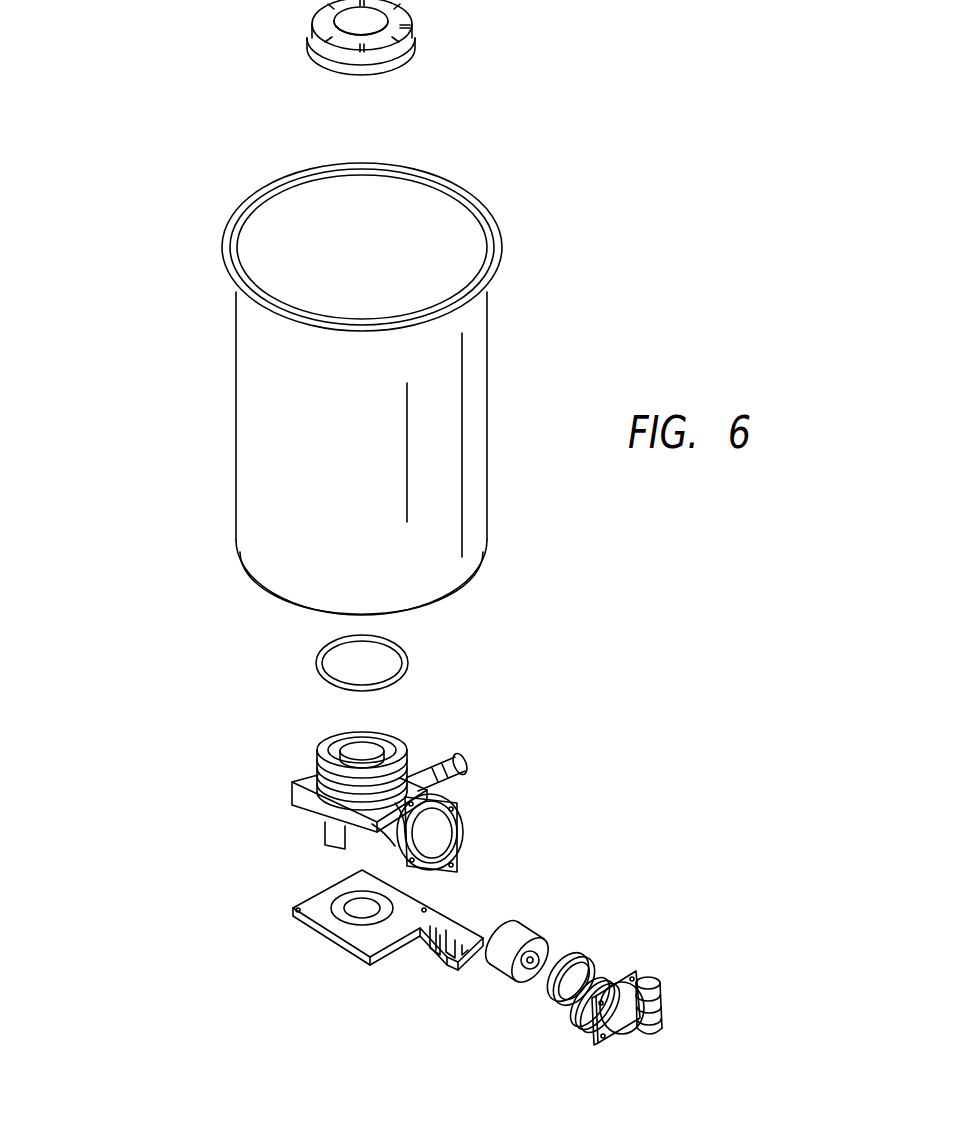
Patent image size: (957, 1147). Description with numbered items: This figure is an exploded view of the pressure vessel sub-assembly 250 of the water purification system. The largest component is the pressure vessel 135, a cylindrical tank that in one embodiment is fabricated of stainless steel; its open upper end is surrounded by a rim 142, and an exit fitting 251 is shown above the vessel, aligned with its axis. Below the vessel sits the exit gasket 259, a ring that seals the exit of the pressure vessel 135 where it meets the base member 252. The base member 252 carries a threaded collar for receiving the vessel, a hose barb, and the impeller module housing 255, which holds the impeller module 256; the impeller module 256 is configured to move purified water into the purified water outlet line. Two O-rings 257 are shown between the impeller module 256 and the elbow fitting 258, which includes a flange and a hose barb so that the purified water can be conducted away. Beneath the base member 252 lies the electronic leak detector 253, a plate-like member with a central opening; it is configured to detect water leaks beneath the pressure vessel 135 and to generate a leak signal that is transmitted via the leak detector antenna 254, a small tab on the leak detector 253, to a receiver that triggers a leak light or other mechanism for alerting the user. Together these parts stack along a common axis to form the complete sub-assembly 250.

The pressure vessel 135 is at (235, 378).
The canister rim 142 is at (483, 223).
The pressure vessel sub-assembly 250 is at (593, 285).
The exit fitting 251 is at (312, 22).
The base member 252 is at (327, 838).
The leak detector 253 is at (297, 910).
The leak detector antenna 254 is at (437, 950).
The impeller module housing 255 is at (450, 837).
The impeller module 256 is at (542, 937).
The O-rings 257 is at (577, 958).
The elbow fitting 258 is at (653, 997).
The exit gasket 259 is at (417, 645).